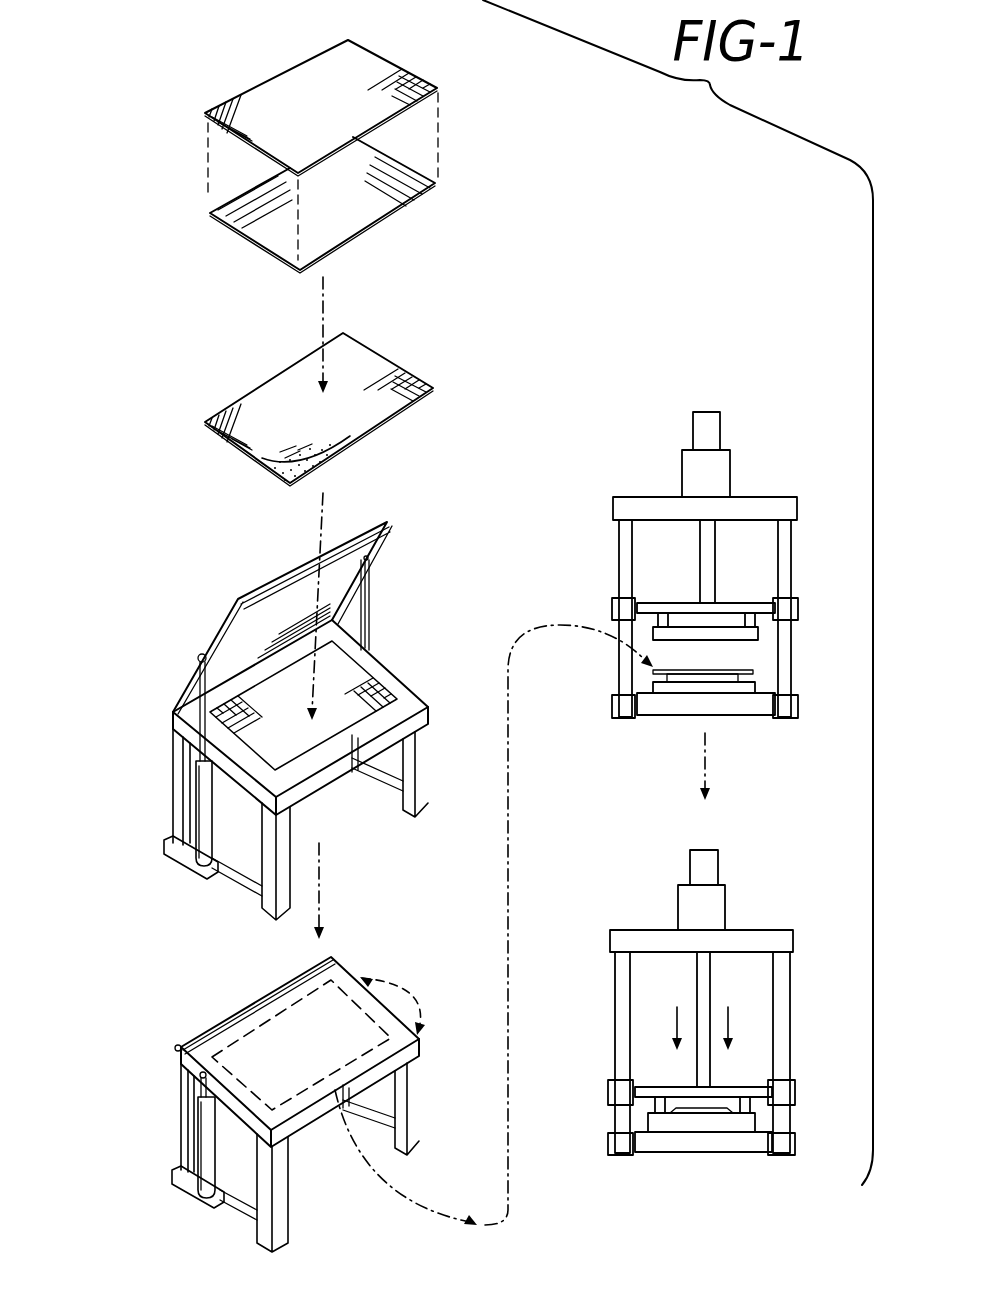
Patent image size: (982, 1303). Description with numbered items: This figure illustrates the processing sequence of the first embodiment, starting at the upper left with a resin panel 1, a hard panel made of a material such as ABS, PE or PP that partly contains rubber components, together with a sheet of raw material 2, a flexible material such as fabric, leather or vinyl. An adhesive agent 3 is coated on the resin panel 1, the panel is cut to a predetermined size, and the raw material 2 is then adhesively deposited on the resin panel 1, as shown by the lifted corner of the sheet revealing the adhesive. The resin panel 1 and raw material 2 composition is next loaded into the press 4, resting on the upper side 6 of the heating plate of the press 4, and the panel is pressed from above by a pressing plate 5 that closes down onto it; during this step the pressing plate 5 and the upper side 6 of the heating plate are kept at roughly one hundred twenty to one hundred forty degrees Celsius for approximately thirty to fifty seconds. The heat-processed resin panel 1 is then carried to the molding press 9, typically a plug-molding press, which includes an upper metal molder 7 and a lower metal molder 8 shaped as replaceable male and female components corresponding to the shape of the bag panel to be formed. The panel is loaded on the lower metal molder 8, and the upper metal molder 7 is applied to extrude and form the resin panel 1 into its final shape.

The resin panel 1 is at (240, 233).
The raw material 2 is at (230, 107).
The adhesive agent 3 is at (307, 463).
The press 4 is at (155, 694).
The pressing plate 5 is at (369, 541).
The upper side of the heating plate 6 is at (406, 706).
The upper metal molder 7 is at (728, 633).
The lower metal molder 8 is at (720, 680).
The molding press 9 is at (799, 478).